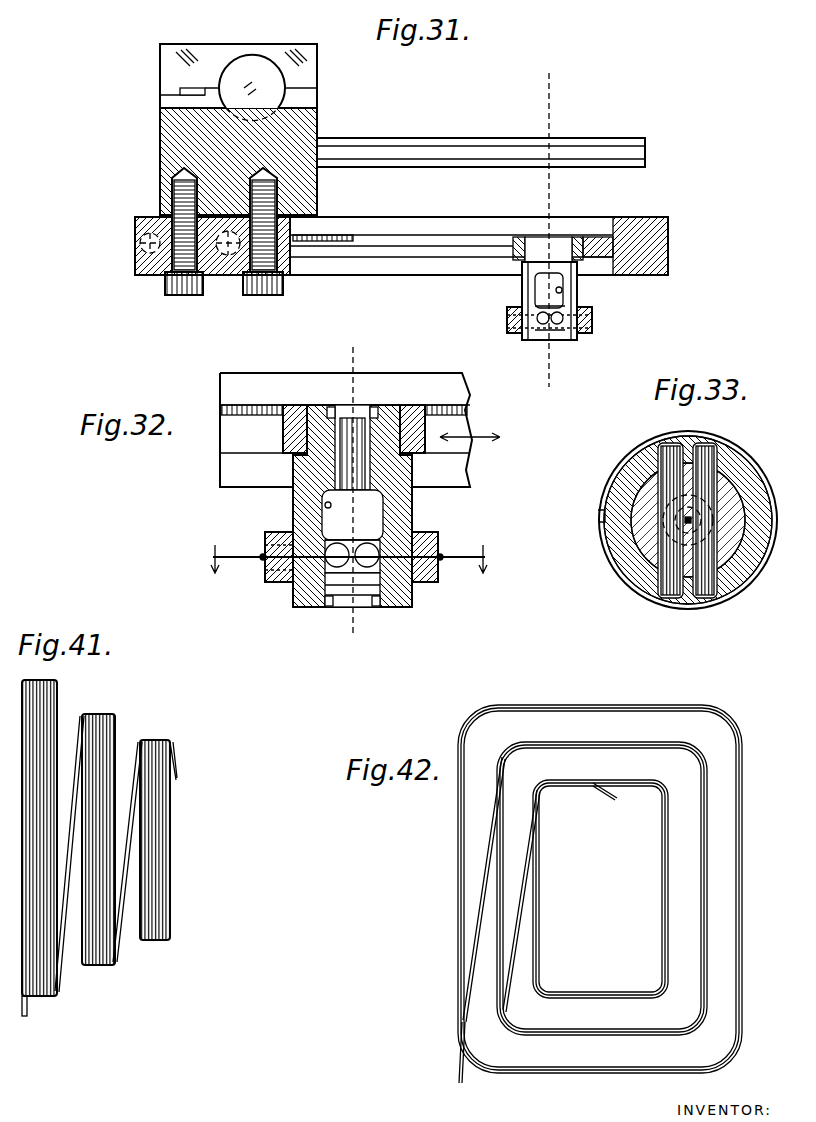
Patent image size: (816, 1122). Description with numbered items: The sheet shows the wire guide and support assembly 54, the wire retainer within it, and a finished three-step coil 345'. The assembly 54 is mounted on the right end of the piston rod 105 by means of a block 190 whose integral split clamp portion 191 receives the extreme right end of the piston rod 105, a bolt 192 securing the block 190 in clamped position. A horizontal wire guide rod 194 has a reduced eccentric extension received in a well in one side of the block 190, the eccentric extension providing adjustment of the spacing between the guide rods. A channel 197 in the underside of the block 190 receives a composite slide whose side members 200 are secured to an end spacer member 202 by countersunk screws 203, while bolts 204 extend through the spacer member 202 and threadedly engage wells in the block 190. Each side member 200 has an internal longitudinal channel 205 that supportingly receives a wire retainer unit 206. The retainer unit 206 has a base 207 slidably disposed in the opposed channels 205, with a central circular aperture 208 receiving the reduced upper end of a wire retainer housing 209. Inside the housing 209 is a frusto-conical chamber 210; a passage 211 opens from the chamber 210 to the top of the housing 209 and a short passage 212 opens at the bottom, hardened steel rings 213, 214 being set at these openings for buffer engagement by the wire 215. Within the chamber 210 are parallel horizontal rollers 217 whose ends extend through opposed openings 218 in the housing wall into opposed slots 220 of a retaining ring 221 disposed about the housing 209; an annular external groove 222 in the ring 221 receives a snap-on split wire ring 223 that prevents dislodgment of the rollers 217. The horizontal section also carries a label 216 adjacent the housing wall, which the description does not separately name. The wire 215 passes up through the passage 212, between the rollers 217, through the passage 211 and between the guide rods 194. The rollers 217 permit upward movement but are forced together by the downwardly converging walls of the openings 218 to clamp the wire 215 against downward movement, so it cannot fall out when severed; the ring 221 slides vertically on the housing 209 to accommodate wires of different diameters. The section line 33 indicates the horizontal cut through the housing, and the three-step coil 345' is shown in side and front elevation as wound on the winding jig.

In FIG. 31, the wire guide and support assembly 54 is at (100, 181).
In FIG. 32, the wire guide and support assembly 54 is at (199, 493).
In FIG. 31, the piston rod 105 is at (255, 62).
In FIG. 31, the block 190 is at (150, 137).
In FIG. 31, the split clamp portion 191 is at (160, 63).
In FIG. 31, the bolt 192 is at (197, 88).
In FIG. 31, the wire guide rod 194 is at (450, 138).
In FIG. 31, the channel 197 is at (318, 210).
In FIG. 31, the side member 200 is at (414, 217).
In FIG. 32, the side member 200 is at (436, 378).
In FIG. 31, the end spacer member 202 is at (135, 263).
In FIG. 31, the countersunk screw 203 is at (140, 243).
In FIG. 31, the bolt 204 is at (262, 297).
In FIG. 31, the internal longitudinal channel 205 is at (400, 258).
In FIG. 31, the wire retainer unit 206 is at (575, 348).
In FIG. 32, the wire retainer unit 206 is at (424, 602).
In FIG. 33, the wire retainer unit 206 is at (620, 605).
In FIG. 31, the base 207 is at (579, 236).
In FIG. 32, the base 207 is at (283, 436).
In FIG. 31, the central circular aperture 208 is at (512, 248).
In FIG. 32, the central circular aperture 208 is at (430, 440).
In FIG. 31, the wire retainer housing 209 is at (583, 270).
In FIG. 32, the wire retainer housing 209 is at (402, 500).
In FIG. 33, the wire retainer housing 209 is at (727, 490).
In FIG. 31, the chamber 210 is at (533, 292).
In FIG. 32, the chamber 210 is at (410, 480).
In FIG. 33, the chamber 210 is at (686, 479).
In FIG. 32, the passage 211 is at (362, 430).
In FIG. 32, the short passage 212 is at (368, 607).
In FIG. 32, the ring 213 is at (373, 410).
In FIG. 32, the ring 214 is at (333, 610).
In FIG. 33, the ring 214 is at (713, 488).
In FIG. 31, the wire 215 is at (556, 96).
In FIG. 32, the wire 215 is at (358, 355).
In FIG. 33, the wire 215 is at (686, 521).
In FIG. 33, the bore wall 216 is at (700, 497).
In FIG. 31, the roller 217 is at (536, 333).
In FIG. 32, the roller 217 is at (330, 541).
In FIG. 33, the roller 217 is at (701, 600).
In FIG. 31, the opening 218 is at (564, 290).
In FIG. 32, the opening 218 is at (325, 505).
In FIG. 33, the opening 218 is at (718, 555).
In FIG. 32, the slot 220 is at (360, 532).
In FIG. 33, the slot 220 is at (690, 440).
In FIG. 31, the retaining ring 221 is at (593, 331).
In FIG. 32, the retaining ring 221 is at (270, 581).
In FIG. 31, the annular external groove 222 is at (526, 326).
In FIG. 32, the annular external groove 222 is at (300, 582).
In FIG. 33, the annular external groove 222 is at (615, 581).
In FIG. 31, the split wire ring 223 is at (602, 322).
In FIG. 32, the split wire ring 223 is at (440, 562).
In FIG. 33, the split wire ring 223 is at (640, 597).
In FIG. 32, the section line 33- 33 is at (355, 547).
In FIG. 41, the three-step coil 345' is at (129, 850).
In FIG. 42, the three-step coil 345' is at (547, 894).